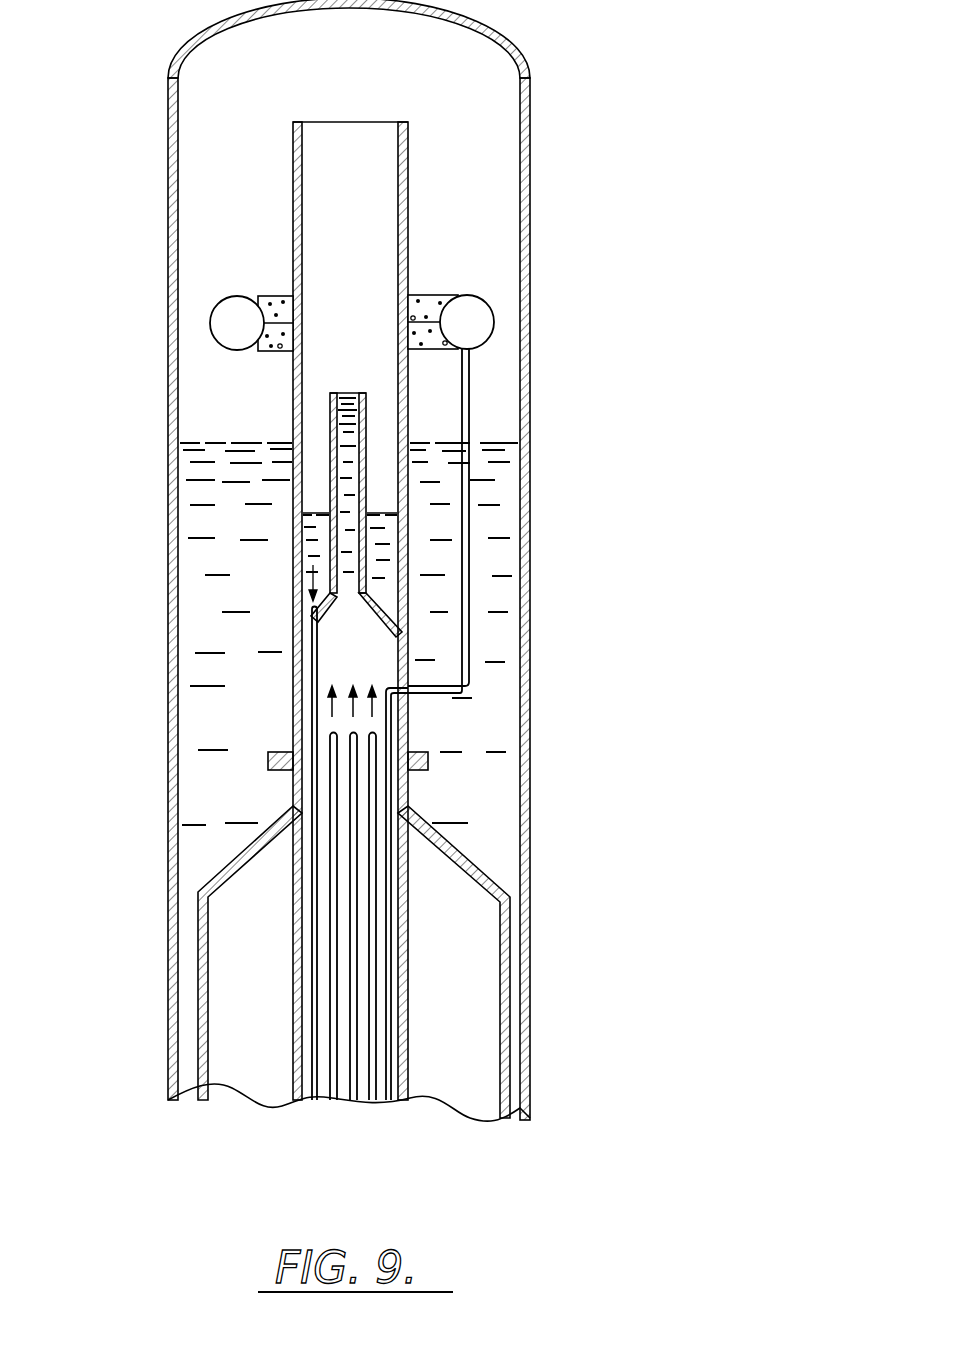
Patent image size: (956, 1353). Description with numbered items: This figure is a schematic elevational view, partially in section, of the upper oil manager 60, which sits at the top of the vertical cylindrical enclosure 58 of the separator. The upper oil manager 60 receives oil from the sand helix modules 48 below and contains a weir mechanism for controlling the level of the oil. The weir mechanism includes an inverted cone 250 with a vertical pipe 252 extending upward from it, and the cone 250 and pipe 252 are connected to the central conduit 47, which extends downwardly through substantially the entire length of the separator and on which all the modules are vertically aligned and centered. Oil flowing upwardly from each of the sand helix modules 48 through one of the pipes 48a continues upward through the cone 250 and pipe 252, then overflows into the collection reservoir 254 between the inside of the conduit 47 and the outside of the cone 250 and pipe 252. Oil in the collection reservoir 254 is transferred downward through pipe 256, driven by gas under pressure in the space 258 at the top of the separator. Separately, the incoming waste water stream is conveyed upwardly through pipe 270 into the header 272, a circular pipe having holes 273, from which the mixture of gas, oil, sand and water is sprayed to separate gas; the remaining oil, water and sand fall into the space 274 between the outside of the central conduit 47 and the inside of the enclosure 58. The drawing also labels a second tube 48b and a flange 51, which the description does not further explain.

The upper oil manager 60 is at (425, 560).
The cylindrical enclosure 58 is at (528, 686).
The space 258 is at (378, 74).
The space 274 is at (258, 583).
The central conduit 47 is at (418, 190).
The collection reservoir 254 is at (318, 494).
The header 272 is at (432, 296).
The holes 273 is at (270, 298).
The vertical pipe 252 is at (366, 396).
The inverted cone 250 is at (376, 606).
The pipe 256 is at (322, 640).
The pipes 48a is at (368, 948).
The inner tube 48b is at (353, 922).
The pipe 270 is at (393, 1023).
The flange 51 is at (428, 762).
The sand helix modules 48 is at (505, 942).